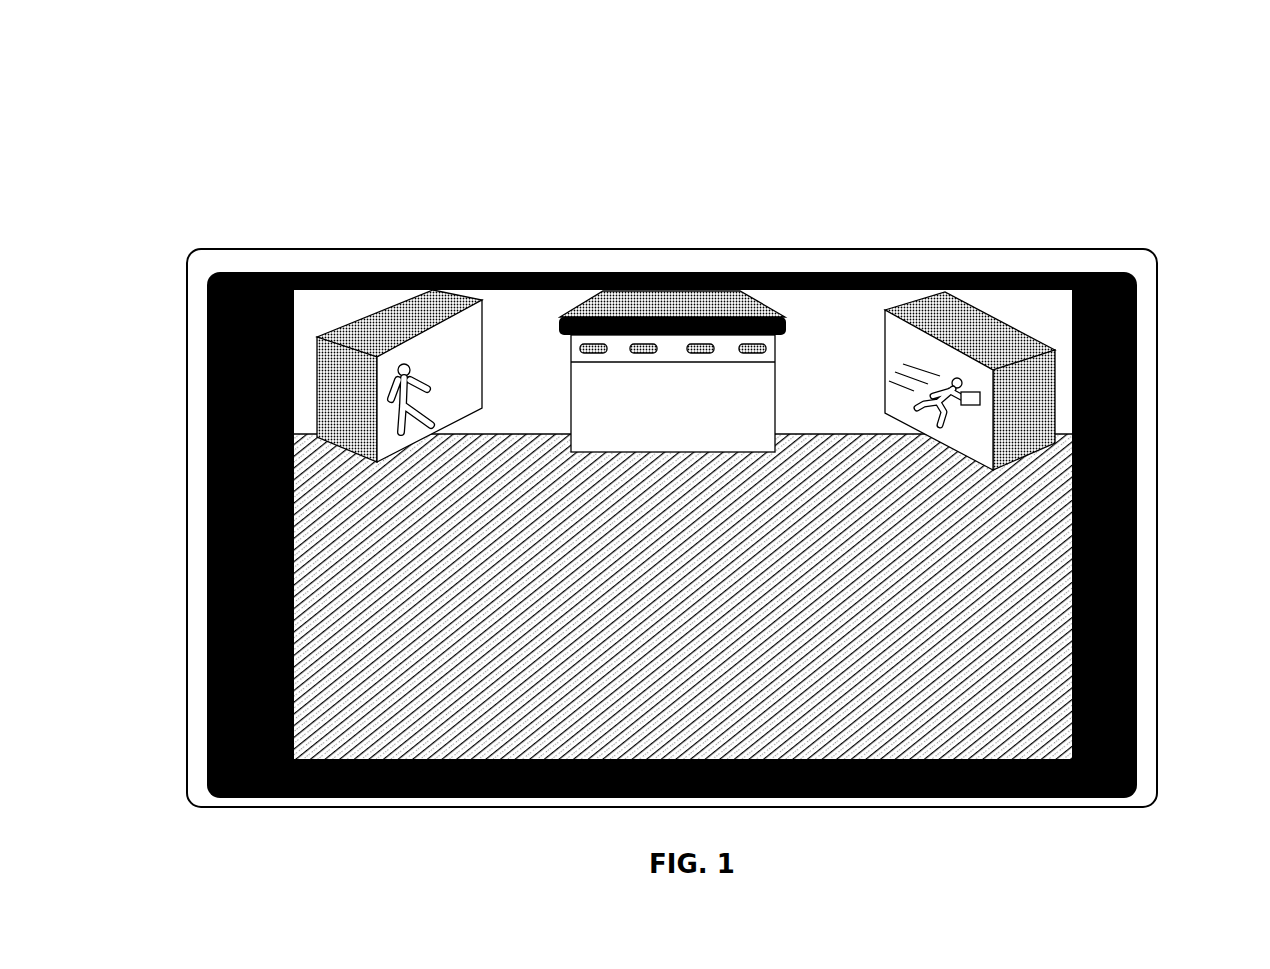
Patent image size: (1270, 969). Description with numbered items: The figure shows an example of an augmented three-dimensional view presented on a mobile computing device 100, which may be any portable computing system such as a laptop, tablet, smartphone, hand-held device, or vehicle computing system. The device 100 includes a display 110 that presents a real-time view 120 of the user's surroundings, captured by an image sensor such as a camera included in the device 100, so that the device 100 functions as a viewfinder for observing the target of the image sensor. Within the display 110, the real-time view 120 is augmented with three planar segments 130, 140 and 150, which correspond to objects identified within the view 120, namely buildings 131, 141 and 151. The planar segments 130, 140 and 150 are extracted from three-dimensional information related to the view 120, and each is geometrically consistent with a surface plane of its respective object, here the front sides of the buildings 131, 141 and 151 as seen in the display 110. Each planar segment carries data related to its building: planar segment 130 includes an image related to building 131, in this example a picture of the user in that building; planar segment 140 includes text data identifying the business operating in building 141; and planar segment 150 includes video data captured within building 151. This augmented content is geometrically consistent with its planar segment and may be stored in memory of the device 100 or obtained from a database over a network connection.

The mobile computing device 100 is at (932, 250).
The display 110 is at (207, 402).
The real-time view 120 is at (827, 358).
The planar segment 130 is at (470, 355).
The building 131 is at (367, 343).
The planar segment 140 is at (742, 387).
The building 141 is at (657, 303).
The planar segment 150 is at (975, 434).
The building 151 is at (980, 307).